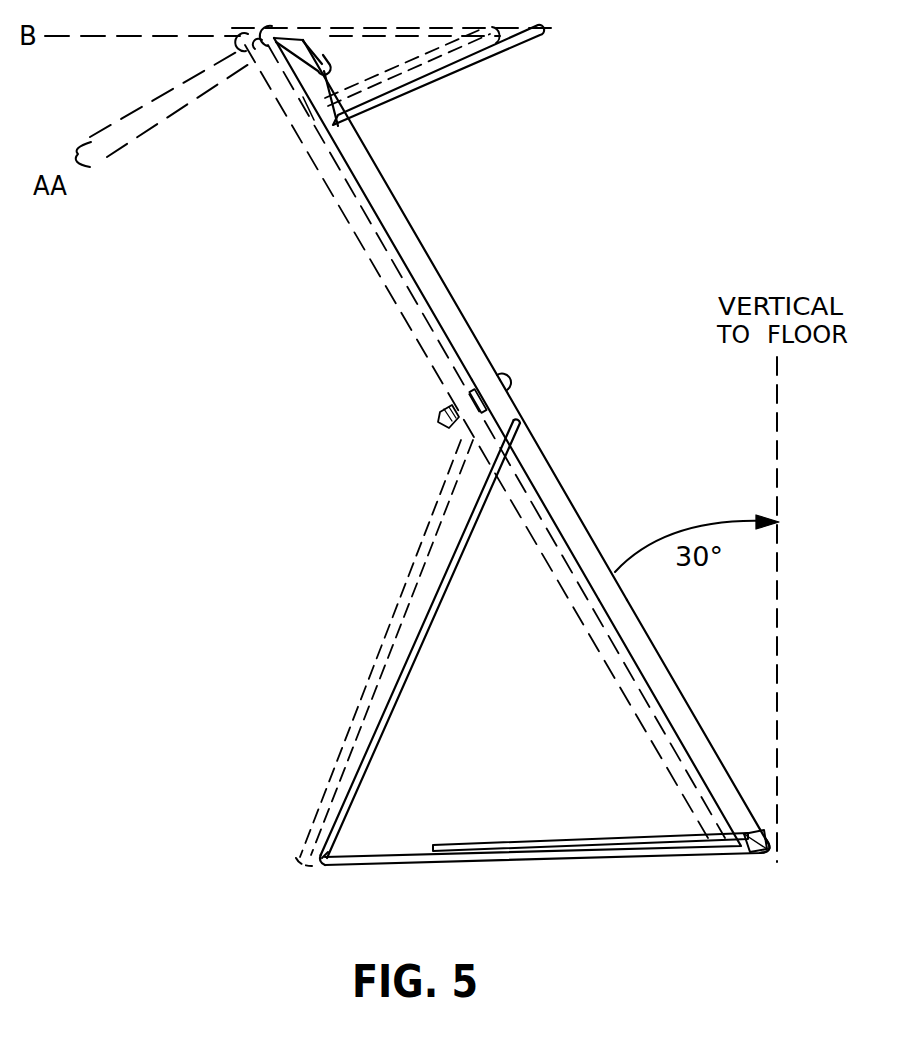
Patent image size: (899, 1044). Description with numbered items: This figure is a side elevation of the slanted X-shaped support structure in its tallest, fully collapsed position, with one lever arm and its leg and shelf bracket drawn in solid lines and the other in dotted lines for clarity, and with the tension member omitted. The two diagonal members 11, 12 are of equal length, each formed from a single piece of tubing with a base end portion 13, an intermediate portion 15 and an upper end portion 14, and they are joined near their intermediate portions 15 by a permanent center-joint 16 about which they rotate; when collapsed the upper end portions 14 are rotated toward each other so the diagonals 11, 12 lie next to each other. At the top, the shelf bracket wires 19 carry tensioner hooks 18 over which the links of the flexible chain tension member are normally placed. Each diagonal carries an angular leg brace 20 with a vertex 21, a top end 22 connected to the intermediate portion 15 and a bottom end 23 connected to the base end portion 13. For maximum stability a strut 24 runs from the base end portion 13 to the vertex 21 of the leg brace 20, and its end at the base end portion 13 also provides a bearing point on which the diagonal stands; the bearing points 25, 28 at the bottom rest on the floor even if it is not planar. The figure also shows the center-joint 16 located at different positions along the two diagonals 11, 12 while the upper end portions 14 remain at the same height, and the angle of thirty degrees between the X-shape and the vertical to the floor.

The first diagonal member 11 is at (430, 281).
The second diagonal member 12 is at (365, 250).
The base end portion 13 is at (727, 791).
The upper end portion 14 is at (304, 108).
The intermediate portion 15 is at (534, 465).
The center-joint 16 is at (472, 402).
The tensioner hook 18 is at (330, 62).
The shelf bracket wire 19 is at (547, 32).
The angular leg brace 20 is at (414, 644).
The vertex 21 is at (318, 856).
The top end 22 is at (480, 511).
The bottom end 23 is at (745, 838).
The strut 24 is at (679, 856).
The bearing point 25 is at (346, 868).
The bearing point 28 is at (768, 857).